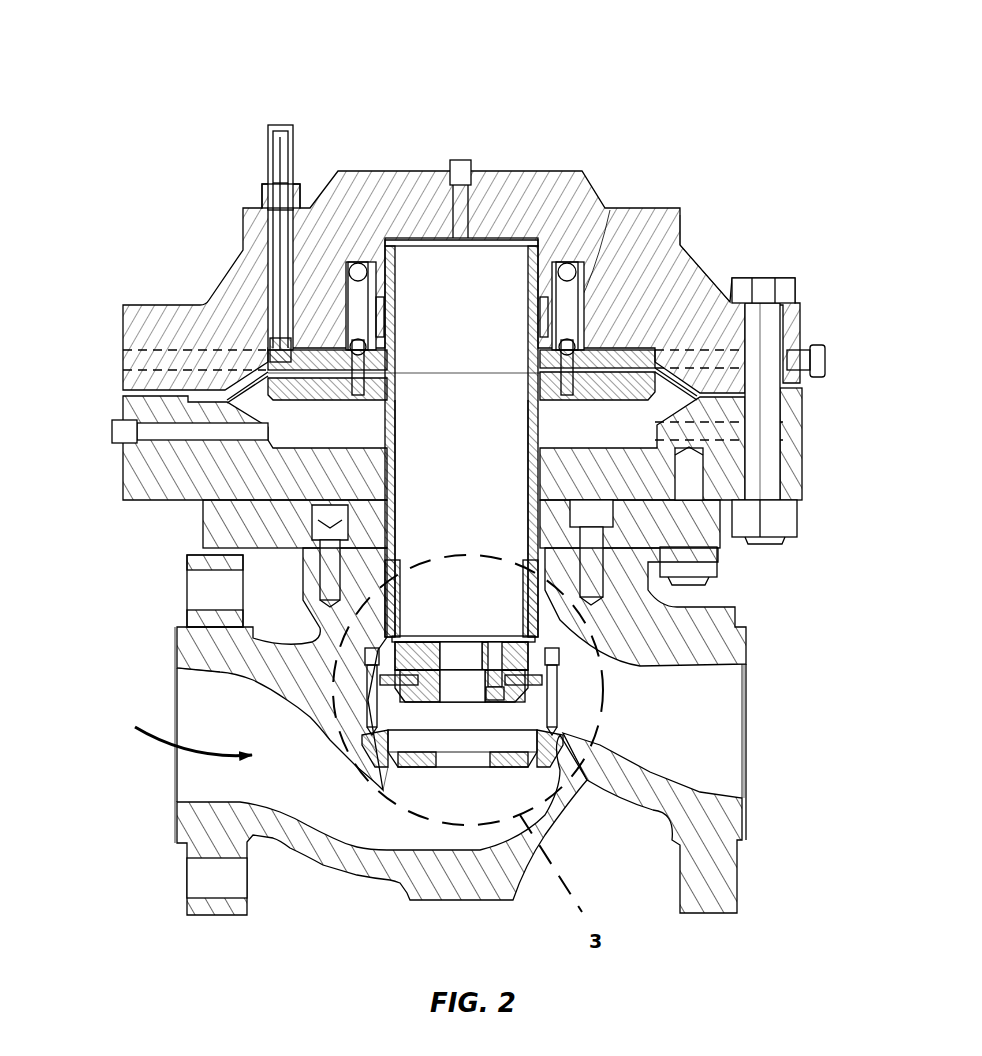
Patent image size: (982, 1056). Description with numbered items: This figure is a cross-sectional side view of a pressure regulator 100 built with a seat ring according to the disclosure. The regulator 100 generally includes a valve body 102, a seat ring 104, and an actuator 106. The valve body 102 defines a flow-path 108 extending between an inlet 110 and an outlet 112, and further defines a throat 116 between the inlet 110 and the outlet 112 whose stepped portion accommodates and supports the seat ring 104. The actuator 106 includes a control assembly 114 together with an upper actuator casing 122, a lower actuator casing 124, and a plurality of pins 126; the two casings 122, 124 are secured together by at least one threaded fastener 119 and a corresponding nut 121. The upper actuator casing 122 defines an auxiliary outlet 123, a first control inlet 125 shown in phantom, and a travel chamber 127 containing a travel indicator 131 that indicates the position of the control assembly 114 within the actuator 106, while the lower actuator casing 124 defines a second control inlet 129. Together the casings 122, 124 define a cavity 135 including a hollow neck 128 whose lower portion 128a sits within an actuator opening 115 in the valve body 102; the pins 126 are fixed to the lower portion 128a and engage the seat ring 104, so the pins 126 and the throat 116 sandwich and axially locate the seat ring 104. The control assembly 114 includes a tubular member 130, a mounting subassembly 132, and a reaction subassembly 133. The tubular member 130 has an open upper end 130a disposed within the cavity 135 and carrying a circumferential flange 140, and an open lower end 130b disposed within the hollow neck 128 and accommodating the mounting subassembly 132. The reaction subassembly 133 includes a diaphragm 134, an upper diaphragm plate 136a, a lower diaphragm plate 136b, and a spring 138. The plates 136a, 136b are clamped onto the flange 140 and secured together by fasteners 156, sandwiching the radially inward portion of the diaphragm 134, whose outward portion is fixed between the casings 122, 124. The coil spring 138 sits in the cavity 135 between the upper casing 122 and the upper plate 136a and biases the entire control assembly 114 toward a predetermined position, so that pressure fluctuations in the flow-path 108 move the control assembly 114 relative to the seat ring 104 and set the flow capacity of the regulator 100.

The pressure regulator 100 is at (642, 125).
The valve body 102 is at (748, 886).
The seat ring 104 is at (503, 768).
The actuator 106 is at (688, 198).
The flow-path 108 is at (140, 718).
The inlet 110 is at (188, 678).
The outlet 112 is at (748, 672).
The control assembly 114 is at (525, 362).
The actuator opening 115 is at (542, 565).
The throat 116 is at (374, 778).
The threaded fastener 119 is at (798, 335).
The nut 121 is at (790, 520).
The upper actuator casing 122 is at (668, 242).
The auxiliary outlet 123 is at (462, 205).
The lower actuator casing 124 is at (797, 455).
The first control inlet 125 is at (136, 354).
The pins 126 is at (555, 705).
The travel chamber 127 is at (272, 290).
The hollow neck 128 is at (394, 512).
The lower portion of the hollow neck 128a is at (396, 602).
The second control inlet 129 is at (162, 432).
The tubular member 130 is at (400, 480).
The upper end of the tubular member 130a is at (383, 323).
The lower end of the tubular member 130b is at (532, 478).
The travel indicator 131 is at (275, 158).
The mounting subassembly 132 is at (510, 630).
The reaction subassembly 133 is at (604, 402).
The diaphragm 134 is at (682, 392).
The cavity 135 is at (395, 430).
The upper diaphragm plate 136a is at (690, 262).
The lower diaphragm plate 136b is at (708, 280).
The spring 138 is at (612, 255).
The circumferential flange 140 is at (395, 386).
The fasteners 156 is at (396, 406).